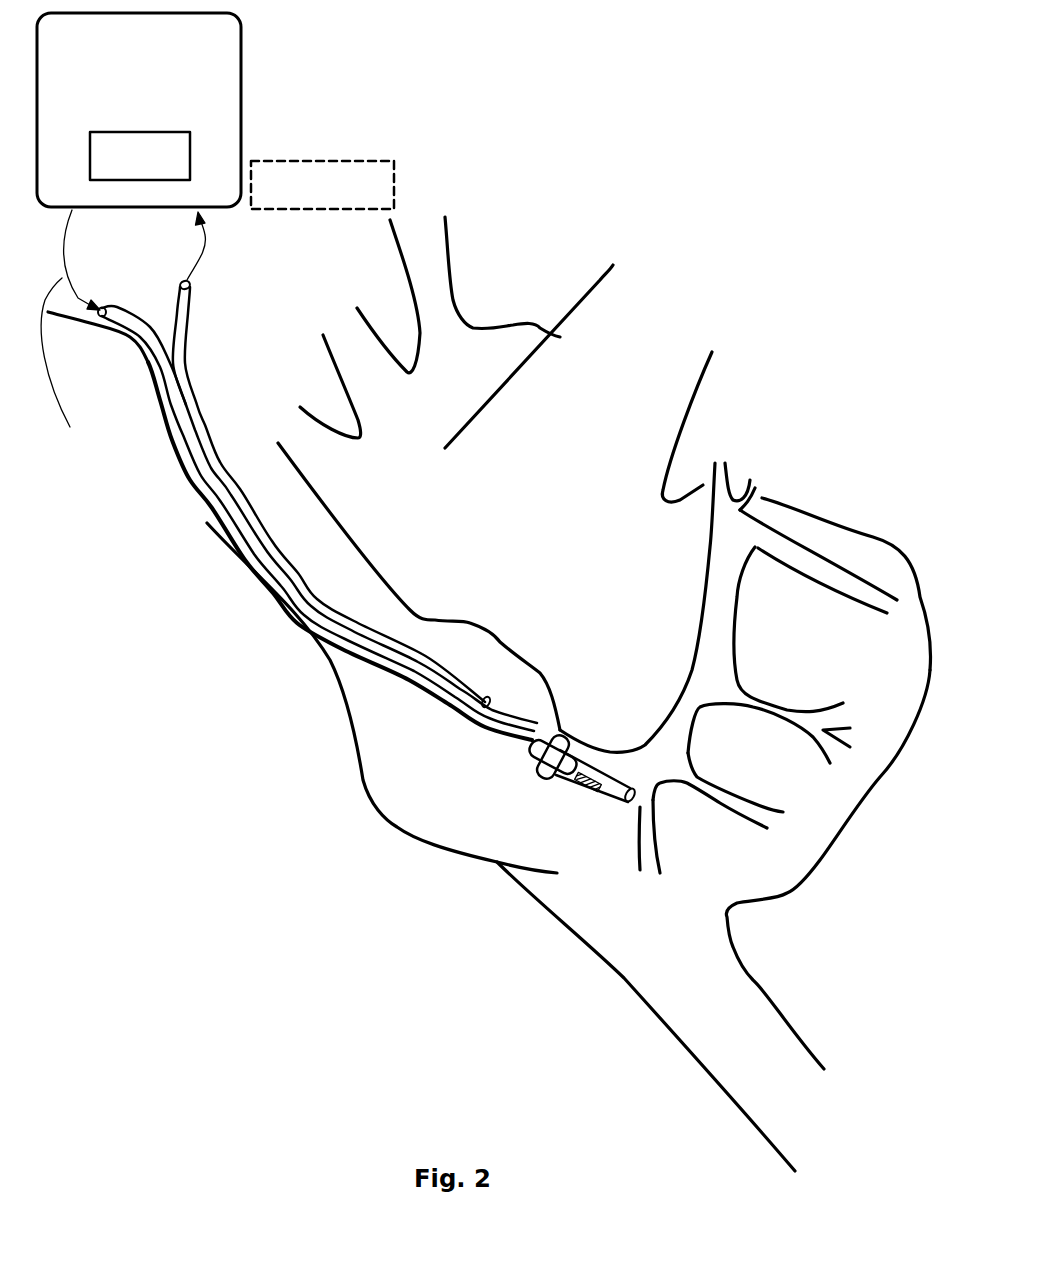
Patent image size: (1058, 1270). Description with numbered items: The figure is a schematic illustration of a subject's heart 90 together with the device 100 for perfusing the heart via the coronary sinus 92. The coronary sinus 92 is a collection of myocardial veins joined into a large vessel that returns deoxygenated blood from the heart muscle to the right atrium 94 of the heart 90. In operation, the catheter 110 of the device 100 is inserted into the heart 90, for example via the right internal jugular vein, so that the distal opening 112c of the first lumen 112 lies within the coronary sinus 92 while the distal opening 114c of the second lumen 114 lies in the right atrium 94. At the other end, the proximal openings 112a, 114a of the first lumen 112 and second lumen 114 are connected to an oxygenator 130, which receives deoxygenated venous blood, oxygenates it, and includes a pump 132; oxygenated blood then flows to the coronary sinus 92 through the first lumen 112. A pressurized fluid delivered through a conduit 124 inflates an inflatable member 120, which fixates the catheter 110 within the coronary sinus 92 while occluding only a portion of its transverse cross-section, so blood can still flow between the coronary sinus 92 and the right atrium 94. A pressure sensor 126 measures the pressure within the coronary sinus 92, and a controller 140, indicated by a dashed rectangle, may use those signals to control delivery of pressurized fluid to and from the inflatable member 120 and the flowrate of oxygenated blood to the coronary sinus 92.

The heart 90 is at (840, 512).
The coronary sinus 92 is at (637, 763).
The right atrium 94 is at (393, 777).
The device 100 is at (432, 150).
The catheter 110 is at (185, 485).
The first lumen 112 is at (192, 437).
The proximal opening of first lumen 112a is at (103, 306).
The distal opening of first lumen 112c is at (634, 800).
The second lumen 114 is at (436, 666).
The proximal opening of second lumen 114a is at (191, 289).
The distal opening of second lumen 114c is at (491, 703).
The inflatable member 120 is at (541, 763).
The conduit 124 is at (480, 727).
The pressure sensor 126 is at (587, 782).
The oxygenator 130 is at (241, 63).
The pump 132 is at (190, 150).
The controller 140 is at (337, 160).